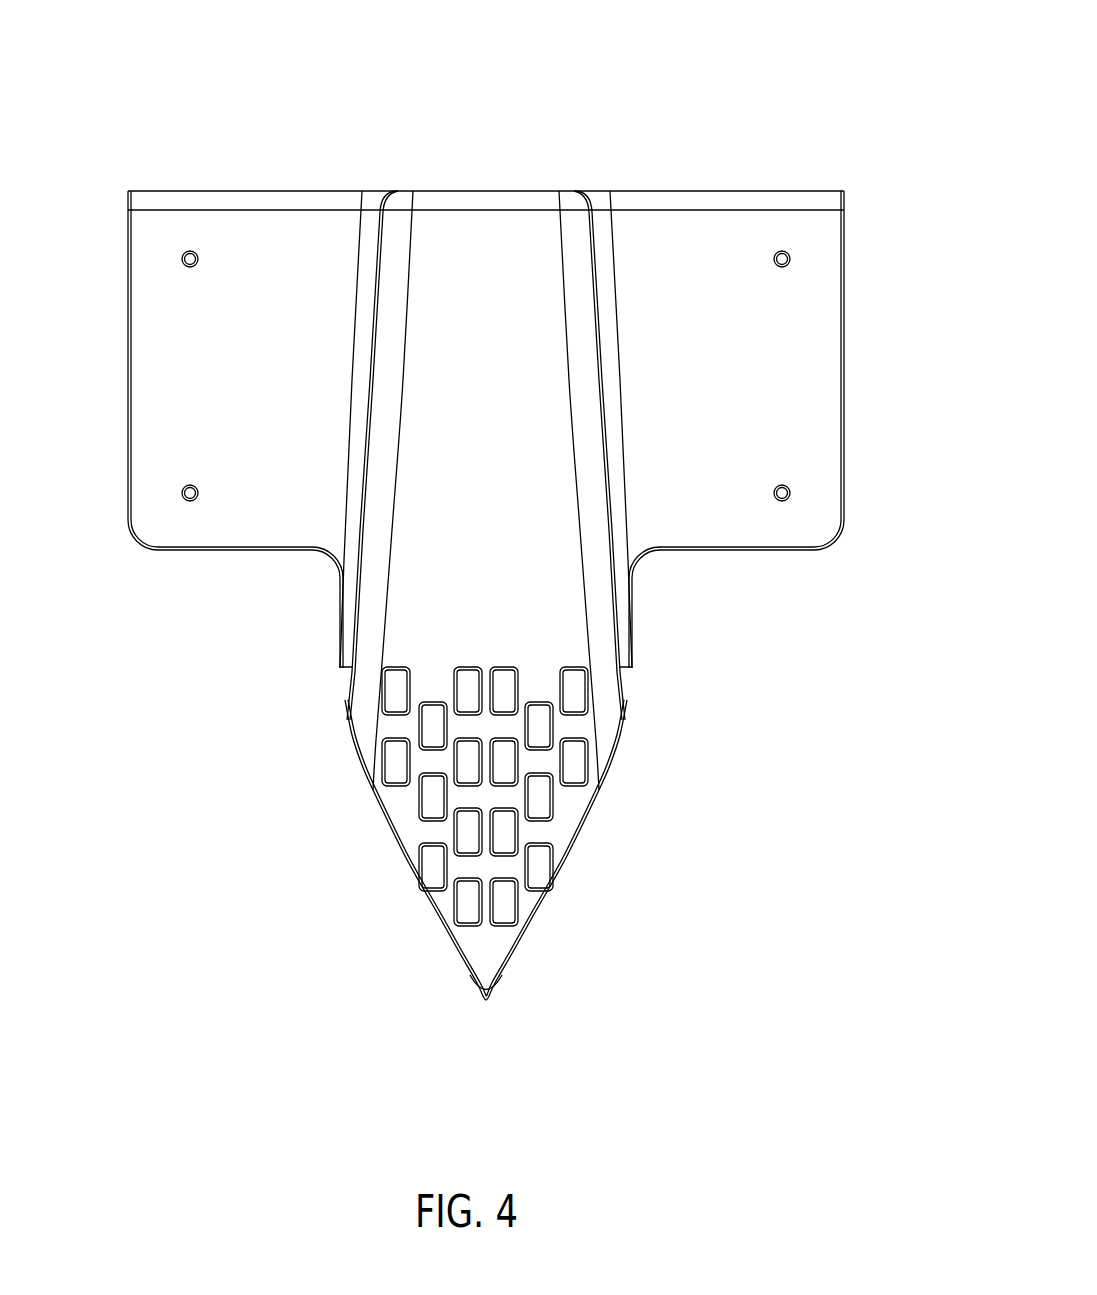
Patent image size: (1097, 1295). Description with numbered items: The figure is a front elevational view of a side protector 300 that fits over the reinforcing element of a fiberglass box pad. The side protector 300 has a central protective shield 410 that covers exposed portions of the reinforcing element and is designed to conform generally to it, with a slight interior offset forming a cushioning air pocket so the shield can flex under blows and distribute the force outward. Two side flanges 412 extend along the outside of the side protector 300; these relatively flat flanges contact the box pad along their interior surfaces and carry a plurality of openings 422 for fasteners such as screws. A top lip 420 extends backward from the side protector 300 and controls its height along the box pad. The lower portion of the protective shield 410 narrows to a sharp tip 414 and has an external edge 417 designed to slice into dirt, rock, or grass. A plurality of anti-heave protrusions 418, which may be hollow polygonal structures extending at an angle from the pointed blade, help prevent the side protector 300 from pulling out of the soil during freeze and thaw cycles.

The side protector 300 is at (637, 117).
The protective shield 410 is at (517, 545).
The side flanges 412 is at (802, 352).
The sharp tip 414 is at (482, 1003).
The external edge 417 is at (433, 800).
The anti-heave protrusions 418 is at (580, 830).
The top lip 420 is at (228, 202).
The openings 422 is at (783, 497).